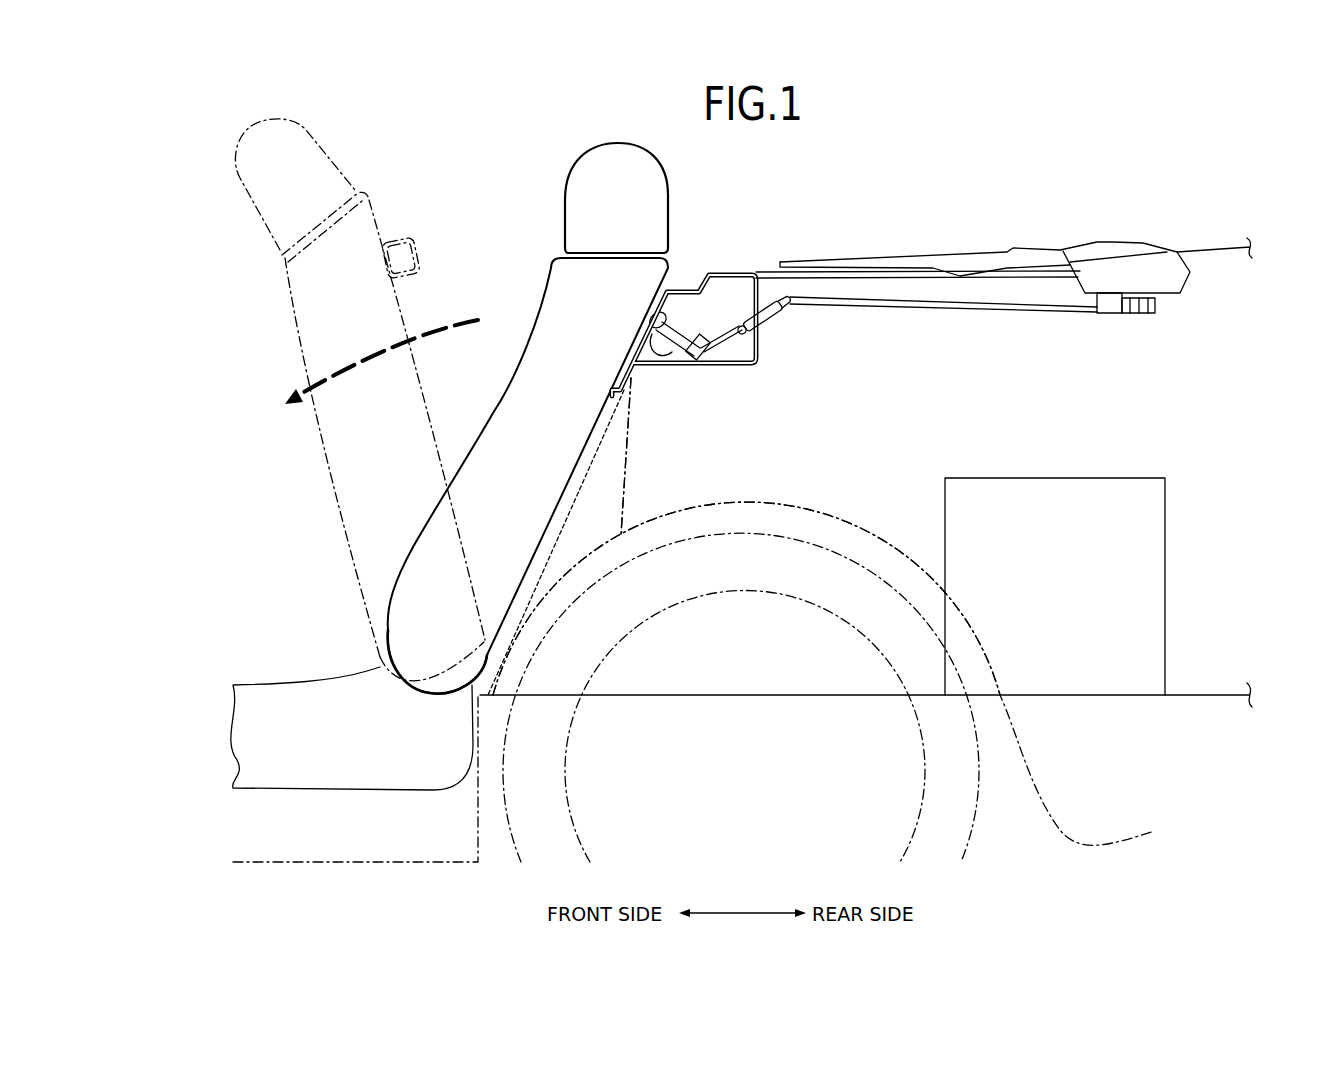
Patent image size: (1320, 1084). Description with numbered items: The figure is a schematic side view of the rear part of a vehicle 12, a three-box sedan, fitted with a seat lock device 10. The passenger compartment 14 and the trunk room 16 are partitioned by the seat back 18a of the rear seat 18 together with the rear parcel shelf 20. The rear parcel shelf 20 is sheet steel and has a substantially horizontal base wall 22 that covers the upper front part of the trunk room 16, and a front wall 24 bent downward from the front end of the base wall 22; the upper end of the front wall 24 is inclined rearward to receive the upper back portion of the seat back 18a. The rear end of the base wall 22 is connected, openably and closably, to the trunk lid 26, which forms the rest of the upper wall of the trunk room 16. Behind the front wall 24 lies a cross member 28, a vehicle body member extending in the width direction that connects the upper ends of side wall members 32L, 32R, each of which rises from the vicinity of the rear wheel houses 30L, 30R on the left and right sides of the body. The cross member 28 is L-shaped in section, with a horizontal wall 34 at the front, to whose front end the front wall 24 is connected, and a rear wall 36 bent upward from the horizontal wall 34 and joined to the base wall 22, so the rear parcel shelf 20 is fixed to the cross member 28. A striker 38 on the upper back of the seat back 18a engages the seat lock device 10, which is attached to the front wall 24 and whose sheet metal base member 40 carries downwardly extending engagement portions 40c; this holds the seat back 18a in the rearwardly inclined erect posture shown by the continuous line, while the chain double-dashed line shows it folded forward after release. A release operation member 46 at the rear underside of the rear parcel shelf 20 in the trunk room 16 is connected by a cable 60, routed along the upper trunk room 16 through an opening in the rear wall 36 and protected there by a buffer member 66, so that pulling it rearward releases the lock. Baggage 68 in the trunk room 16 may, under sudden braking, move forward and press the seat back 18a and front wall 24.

The seat lock device 10 is at (688, 330).
The vehicle 12 is at (160, 131).
The passenger compartment 14 is at (258, 537).
The trunk room 16 is at (1059, 433).
The rear seat 18 is at (307, 671).
The seat back 18a is at (293, 308).
The rear parcel shelf 20 is at (911, 253).
The base wall 22 is at (993, 260).
The front wall 24 is at (637, 357).
The trunk lid 26 is at (1210, 240).
The cross member 28 is at (756, 359).
The rear wheel house 30L is at (812, 512).
The rear wheel house 30R is at (812, 512).
The side wall member 32L is at (621, 462).
The side wall member 32R is at (621, 462).
The horizontal wall 34 is at (732, 368).
The rear wall 36 is at (758, 338).
The striker 38 is at (392, 237).
The base member 40 is at (682, 347).
The engagement portion 40c is at (655, 372).
The release operation member 46 is at (1157, 306).
The cable 60 is at (962, 313).
The buffer member 66 is at (767, 307).
The baggage 68 is at (1168, 588).